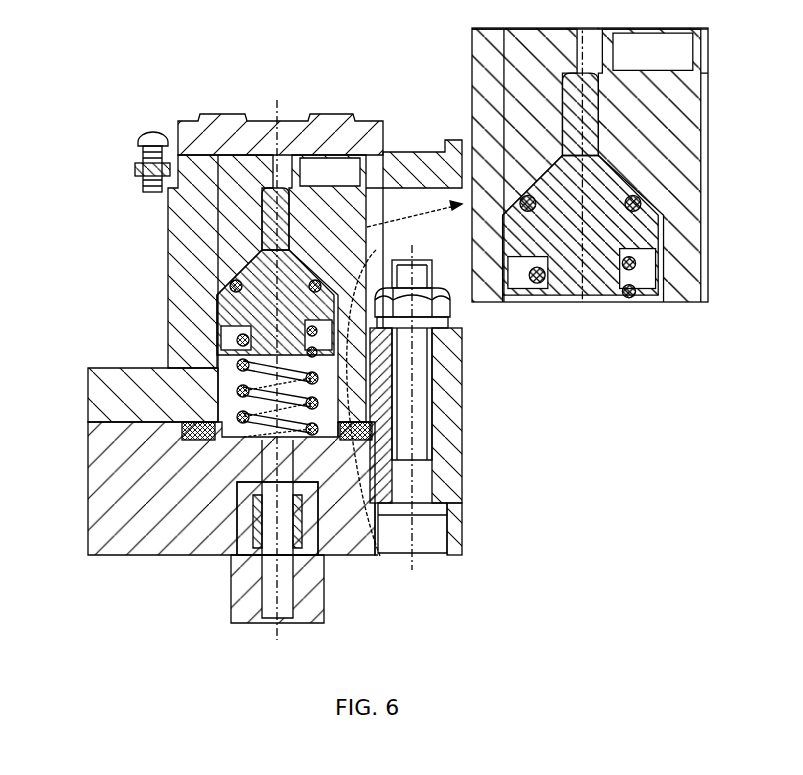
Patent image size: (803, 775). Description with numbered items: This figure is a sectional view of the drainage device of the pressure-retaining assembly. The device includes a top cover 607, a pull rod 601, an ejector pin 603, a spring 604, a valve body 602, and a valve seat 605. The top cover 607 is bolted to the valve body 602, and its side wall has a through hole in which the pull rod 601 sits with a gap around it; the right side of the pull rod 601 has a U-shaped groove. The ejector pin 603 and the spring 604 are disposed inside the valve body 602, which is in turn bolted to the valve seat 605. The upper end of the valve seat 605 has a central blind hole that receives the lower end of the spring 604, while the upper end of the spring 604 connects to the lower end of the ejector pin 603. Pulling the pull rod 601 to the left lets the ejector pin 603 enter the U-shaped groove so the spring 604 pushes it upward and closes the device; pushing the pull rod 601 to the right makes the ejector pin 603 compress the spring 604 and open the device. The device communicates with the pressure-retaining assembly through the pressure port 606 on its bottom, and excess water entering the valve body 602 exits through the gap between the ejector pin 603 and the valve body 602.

The pull rod 601 is at (173, 176).
The valve body 602 is at (190, 258).
The ejector pin 603 is at (222, 300).
The spring 604 is at (298, 362).
The valve seat 605 is at (102, 520).
The pressure port 606 is at (236, 607).
The top cover 607 is at (198, 138).